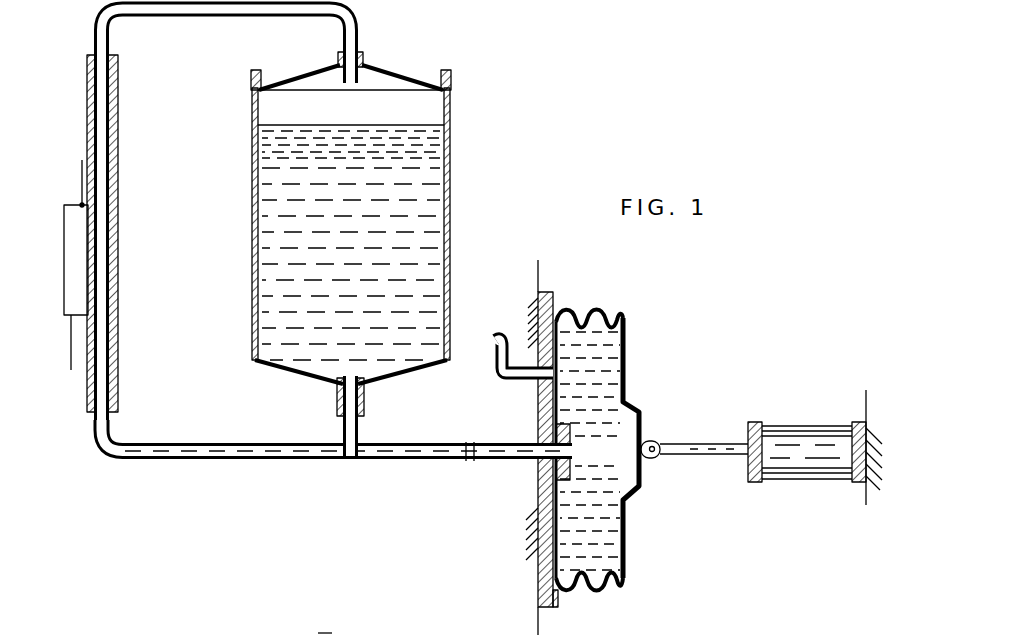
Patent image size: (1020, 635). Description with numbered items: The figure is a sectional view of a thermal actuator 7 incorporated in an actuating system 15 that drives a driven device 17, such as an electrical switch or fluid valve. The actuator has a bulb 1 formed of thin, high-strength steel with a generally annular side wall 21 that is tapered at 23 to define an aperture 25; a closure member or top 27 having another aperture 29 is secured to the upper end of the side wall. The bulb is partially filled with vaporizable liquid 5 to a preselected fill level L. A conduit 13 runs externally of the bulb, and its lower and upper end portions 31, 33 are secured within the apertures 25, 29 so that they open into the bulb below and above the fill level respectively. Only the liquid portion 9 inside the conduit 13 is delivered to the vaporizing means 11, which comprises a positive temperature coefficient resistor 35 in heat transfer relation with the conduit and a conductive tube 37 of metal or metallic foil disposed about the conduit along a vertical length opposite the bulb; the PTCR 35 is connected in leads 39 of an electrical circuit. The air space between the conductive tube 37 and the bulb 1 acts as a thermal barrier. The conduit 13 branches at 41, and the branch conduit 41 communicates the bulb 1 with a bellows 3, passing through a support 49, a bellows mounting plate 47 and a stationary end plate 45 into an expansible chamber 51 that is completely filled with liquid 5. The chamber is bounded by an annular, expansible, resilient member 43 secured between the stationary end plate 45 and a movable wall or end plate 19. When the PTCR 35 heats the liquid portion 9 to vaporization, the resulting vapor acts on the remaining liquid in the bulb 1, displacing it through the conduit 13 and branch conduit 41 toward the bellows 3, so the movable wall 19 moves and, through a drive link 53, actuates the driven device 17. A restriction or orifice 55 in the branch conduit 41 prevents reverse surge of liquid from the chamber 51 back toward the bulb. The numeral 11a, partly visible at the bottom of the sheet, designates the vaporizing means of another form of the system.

The bulb 1 is at (360, 238).
The bellows 3 is at (622, 435).
The vaporizable liquid 5 is at (428, 213).
The thermal actuator 7 is at (470, 92).
The liquid portion 9 is at (104, 153).
The vaporizing means 11 is at (241, 345).
The vaporizing means 11a is at (325, 630).
The conduit 13 is at (198, 444).
The actuating system 15 is at (689, 442).
The driven device 17 is at (814, 470).
The movable wall 19 is at (626, 578).
The side wall 21 is at (252, 300).
The tapered portion 23 is at (300, 380).
The aperture 25 is at (364, 400).
The closure member 27 is at (404, 76).
The aperture 29 is at (362, 60).
The lower end portion 31 is at (343, 382).
The upper end portion 33 is at (338, 84).
The positive temperature coefficient resistor 35 is at (68, 233).
The conductive tube 37 is at (120, 300).
The leads 39 is at (82, 178).
The branch conduit 41 is at (360, 462).
The expansible member 43 is at (600, 314).
The stationary end plate 45 is at (553, 312).
The bellows mounting plate 47 is at (556, 604).
The support 49 is at (532, 530).
The expansible chamber 51 is at (612, 482).
The drive link 53 is at (720, 457).
The restriction 55 is at (472, 462).